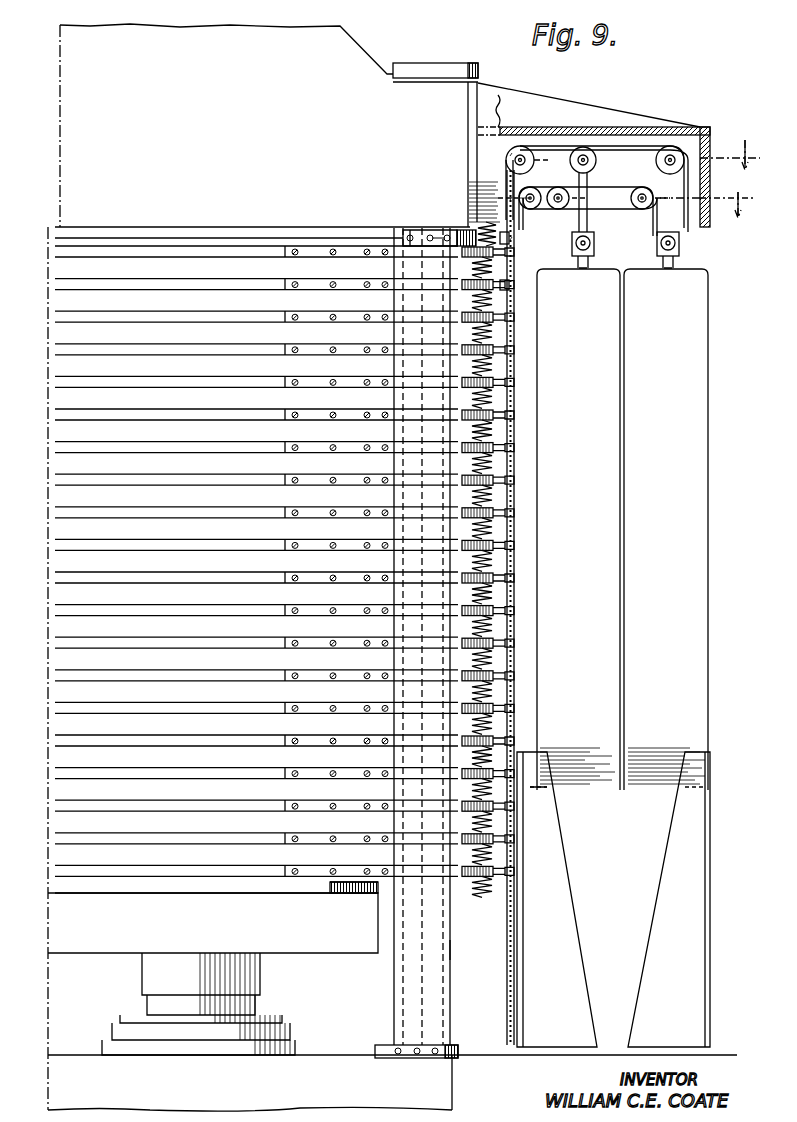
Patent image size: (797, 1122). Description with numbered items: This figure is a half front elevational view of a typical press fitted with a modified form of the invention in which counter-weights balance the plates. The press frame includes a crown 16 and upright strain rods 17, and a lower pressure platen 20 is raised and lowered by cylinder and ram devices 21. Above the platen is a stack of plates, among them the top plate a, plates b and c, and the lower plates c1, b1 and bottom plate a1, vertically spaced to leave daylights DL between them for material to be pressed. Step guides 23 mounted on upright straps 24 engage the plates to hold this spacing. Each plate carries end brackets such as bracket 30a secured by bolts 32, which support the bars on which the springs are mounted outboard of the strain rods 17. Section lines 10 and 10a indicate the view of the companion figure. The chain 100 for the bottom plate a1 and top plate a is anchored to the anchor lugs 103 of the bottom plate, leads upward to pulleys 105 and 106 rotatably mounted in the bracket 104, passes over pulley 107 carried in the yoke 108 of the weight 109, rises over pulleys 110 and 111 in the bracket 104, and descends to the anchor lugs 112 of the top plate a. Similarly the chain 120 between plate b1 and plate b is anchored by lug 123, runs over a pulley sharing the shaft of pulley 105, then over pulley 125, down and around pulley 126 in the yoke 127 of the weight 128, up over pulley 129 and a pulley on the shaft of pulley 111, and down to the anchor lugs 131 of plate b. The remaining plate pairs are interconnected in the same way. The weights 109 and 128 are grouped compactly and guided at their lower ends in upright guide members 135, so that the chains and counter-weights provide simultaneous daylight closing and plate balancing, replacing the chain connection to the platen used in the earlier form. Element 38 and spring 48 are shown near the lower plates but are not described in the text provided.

The crown 16 is at (186, 98).
The section line / plate assembly 10 is at (353, 243).
The section line 10a is at (705, 197).
The chain 100 is at (503, 181).
The bracket 104 is at (598, 112).
The pulley 111 is at (560, 118).
The pulley 129 is at (597, 161).
The pulley 110 is at (675, 146).
The pulley 125 is at (553, 187).
The pulley 105 is at (537, 209).
The pulley 106 is at (636, 209).
The pulley 126 is at (596, 250).
The pulley 107 is at (690, 230).
The yoke 108 is at (681, 250).
The yoke 127 is at (592, 265).
The anchor lugs 131 is at (512, 285).
The anchor lugs 112 is at (512, 257).
The weight 128 is at (596, 396).
The weight 109 is at (690, 389).
The top plate a is at (240, 245).
The plate b is at (245, 290).
The plate c is at (243, 320).
The bolts 32 is at (331, 288).
The end bracket 30a is at (283, 351).
The step guides 23 is at (403, 432).
The daylights DL is at (224, 465).
The upright strain rods 17 is at (400, 988).
The upright straps 24 is at (450, 948).
The lower pressure platen 20 is at (160, 928).
The cylinder and ram devices 21 is at (133, 981).
The bottom plate a1 is at (215, 880).
The plate b1 is at (222, 846).
The plate c1 is at (233, 812).
The upright guide members 135 is at (565, 947).
The spring 48 is at (480, 840).
The chain 120 is at (508, 834).
The lug 123 is at (510, 845).
The hook 38 is at (470, 872).
The anchor lugs 103 is at (508, 878).